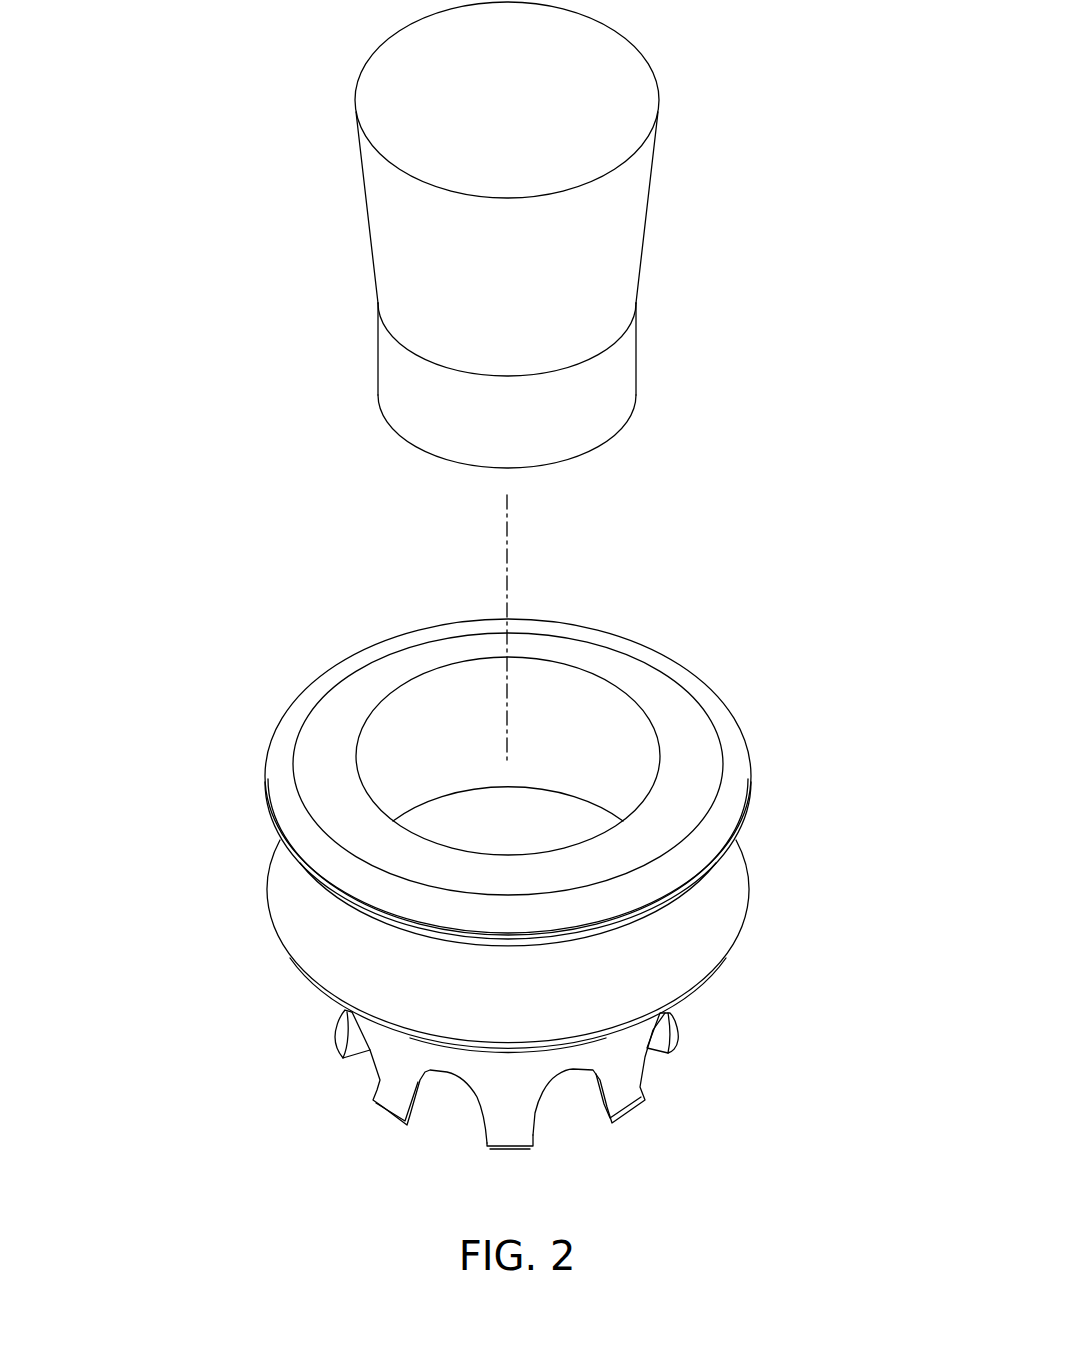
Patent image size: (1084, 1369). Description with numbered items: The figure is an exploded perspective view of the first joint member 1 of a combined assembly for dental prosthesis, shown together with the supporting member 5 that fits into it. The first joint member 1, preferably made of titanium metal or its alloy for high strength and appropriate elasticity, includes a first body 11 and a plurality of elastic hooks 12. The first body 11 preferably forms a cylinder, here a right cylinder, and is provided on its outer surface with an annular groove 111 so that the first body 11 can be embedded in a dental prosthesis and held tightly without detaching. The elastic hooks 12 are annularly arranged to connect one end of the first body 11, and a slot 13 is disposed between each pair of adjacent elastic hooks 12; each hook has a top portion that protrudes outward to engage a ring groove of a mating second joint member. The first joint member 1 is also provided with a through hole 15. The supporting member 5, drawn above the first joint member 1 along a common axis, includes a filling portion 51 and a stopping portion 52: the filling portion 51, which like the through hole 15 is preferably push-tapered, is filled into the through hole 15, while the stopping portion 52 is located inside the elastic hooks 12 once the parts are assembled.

The supporting member 5 is at (540, 234).
The filling portion 51 is at (627, 220).
The stopping portion 52 is at (623, 383).
The first joint member 1 is at (504, 893).
The first body 11 is at (504, 824).
The annular groove 111 is at (733, 882).
The through hole 15 is at (582, 712).
The elastic hooks 12 is at (340, 1030).
The slot 13 is at (362, 1075).